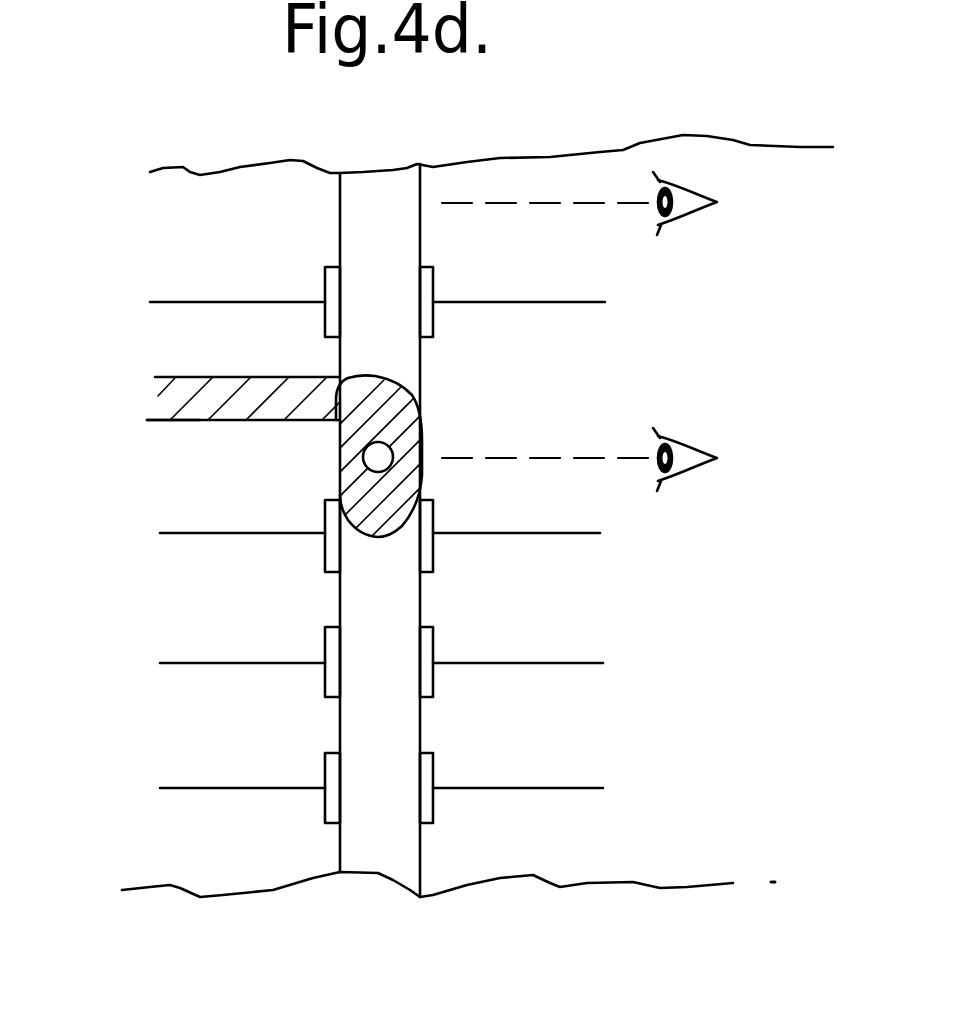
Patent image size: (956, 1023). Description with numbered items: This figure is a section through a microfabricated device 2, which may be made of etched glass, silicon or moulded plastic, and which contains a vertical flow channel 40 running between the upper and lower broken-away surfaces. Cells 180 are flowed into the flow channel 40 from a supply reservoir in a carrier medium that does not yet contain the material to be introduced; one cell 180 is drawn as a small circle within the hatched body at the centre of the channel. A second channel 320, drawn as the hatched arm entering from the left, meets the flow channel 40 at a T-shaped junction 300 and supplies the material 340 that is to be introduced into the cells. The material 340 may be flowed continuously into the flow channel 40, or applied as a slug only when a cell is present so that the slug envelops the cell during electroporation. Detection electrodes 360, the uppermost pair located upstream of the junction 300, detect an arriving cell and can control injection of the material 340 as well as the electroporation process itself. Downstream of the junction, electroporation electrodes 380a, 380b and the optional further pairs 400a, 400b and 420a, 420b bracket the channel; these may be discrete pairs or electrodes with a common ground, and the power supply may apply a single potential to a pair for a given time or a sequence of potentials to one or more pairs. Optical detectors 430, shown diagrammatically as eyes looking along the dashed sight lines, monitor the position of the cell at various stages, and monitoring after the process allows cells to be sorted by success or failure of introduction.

The microfabricated device 2 is at (722, 168).
The flow channel 40 is at (415, 162).
The detection electrodes 360 is at (327, 269).
The material 340 is at (220, 383).
The second channel 320 is at (196, 422).
The junction 300 is at (331, 426).
The cells 180 is at (415, 412).
The electroporation electrode 380a is at (325, 560).
The electroporation electrode 380b is at (433, 555).
The electroporation electrode 400a is at (325, 683).
The electroporation electrode 400b is at (433, 683).
The electroporation electrode 420a is at (325, 806).
The electroporation electrode 420b is at (433, 806).
The optical detectors 430 is at (687, 210).